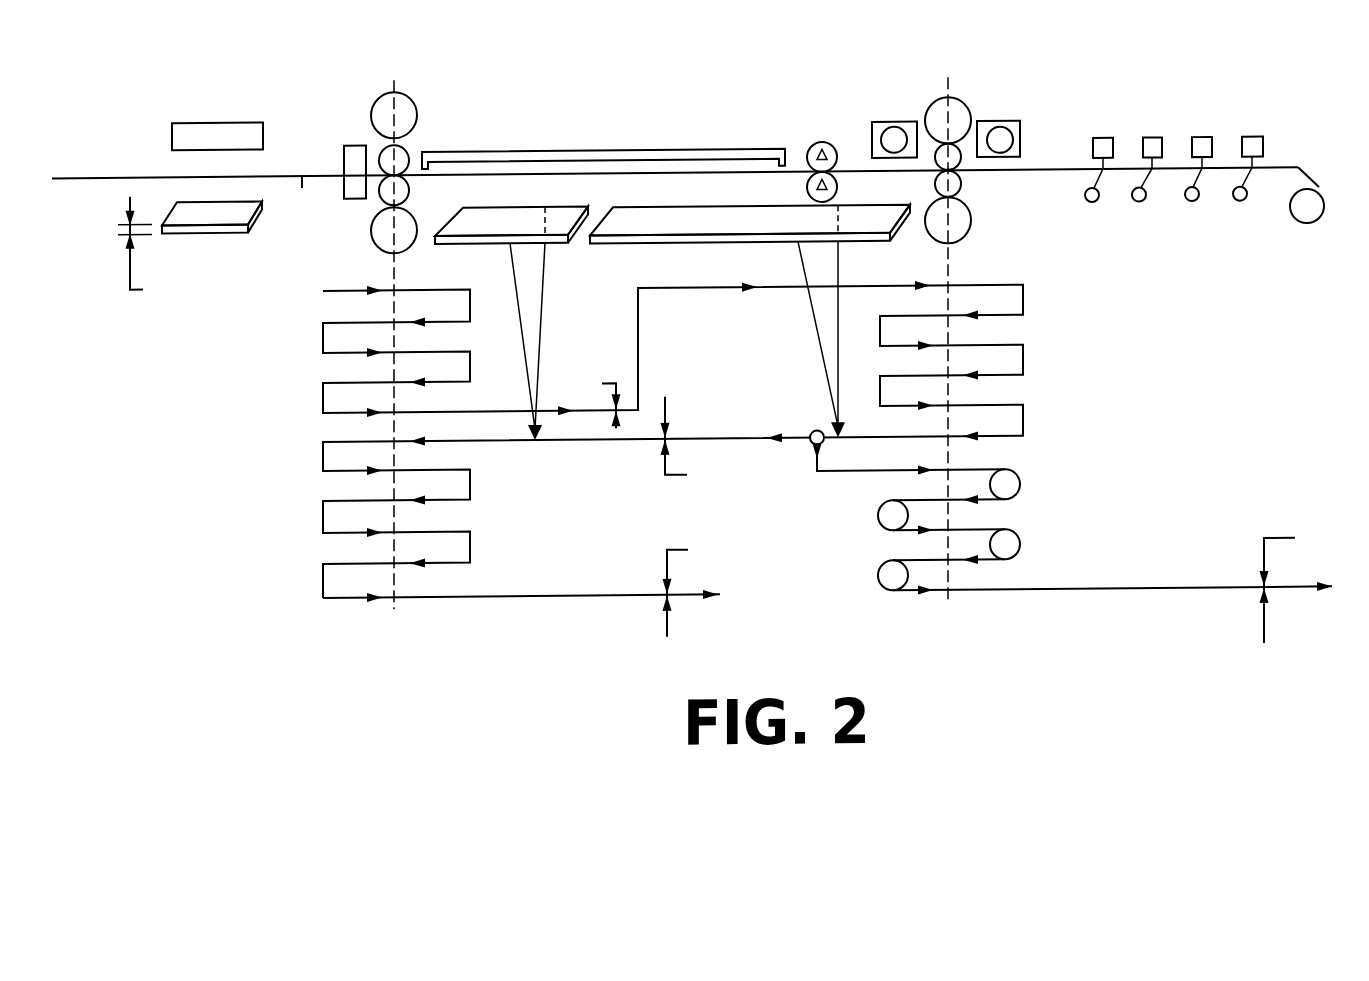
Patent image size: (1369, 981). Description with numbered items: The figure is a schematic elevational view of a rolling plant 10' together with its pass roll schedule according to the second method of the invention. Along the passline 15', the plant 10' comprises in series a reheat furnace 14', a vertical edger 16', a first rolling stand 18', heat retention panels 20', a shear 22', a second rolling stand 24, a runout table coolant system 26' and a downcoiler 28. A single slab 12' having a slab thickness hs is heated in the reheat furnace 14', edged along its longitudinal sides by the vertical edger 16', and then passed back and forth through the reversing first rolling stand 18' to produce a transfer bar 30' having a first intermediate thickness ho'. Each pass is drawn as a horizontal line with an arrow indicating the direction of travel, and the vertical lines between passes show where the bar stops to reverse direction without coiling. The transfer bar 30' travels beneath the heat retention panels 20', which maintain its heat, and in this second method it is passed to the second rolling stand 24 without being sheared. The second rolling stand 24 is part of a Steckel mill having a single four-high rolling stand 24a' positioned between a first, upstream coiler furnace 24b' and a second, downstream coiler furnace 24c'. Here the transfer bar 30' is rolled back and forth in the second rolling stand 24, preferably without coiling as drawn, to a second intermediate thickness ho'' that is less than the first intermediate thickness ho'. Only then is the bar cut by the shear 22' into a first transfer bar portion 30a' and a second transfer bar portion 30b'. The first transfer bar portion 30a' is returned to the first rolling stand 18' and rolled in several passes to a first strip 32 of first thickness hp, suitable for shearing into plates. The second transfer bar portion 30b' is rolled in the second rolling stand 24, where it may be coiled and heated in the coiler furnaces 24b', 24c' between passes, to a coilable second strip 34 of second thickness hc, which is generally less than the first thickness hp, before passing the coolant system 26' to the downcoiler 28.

The rolling plant 10' is at (675, 98).
The slab 12' is at (260, 254).
The reheat furnace 14' is at (217, 105).
The passline 15' is at (303, 200).
The vertical edger 16' is at (331, 139).
The first rolling stand 18' is at (418, 344).
The heat retention panels 20' is at (603, 134).
The shear 22' is at (798, 146).
The second rolling stand 24 is at (980, 322).
The single four-high rolling stand 24a' is at (980, 109).
The first, upstream coiler furnace 24b' is at (887, 113).
The second, downstream coiler furnace 24c' is at (1035, 129).
The runout table coolant system 26' is at (1174, 130).
The downcoiler 28 is at (1315, 210).
The transfer bar 30' is at (673, 425).
The first transfer bar portion 30a' is at (593, 306).
The second transfer bar portion 30b' is at (750, 346).
The first strip 32 is at (478, 596).
The second strip 34 is at (1078, 594).
The slab thickness hs is at (148, 247).
The first intermediate thickness ho' is at (595, 392).
The second intermediate thickness ho'' is at (692, 442).
The first thickness hp is at (694, 582).
The second thickness hc is at (1296, 581).